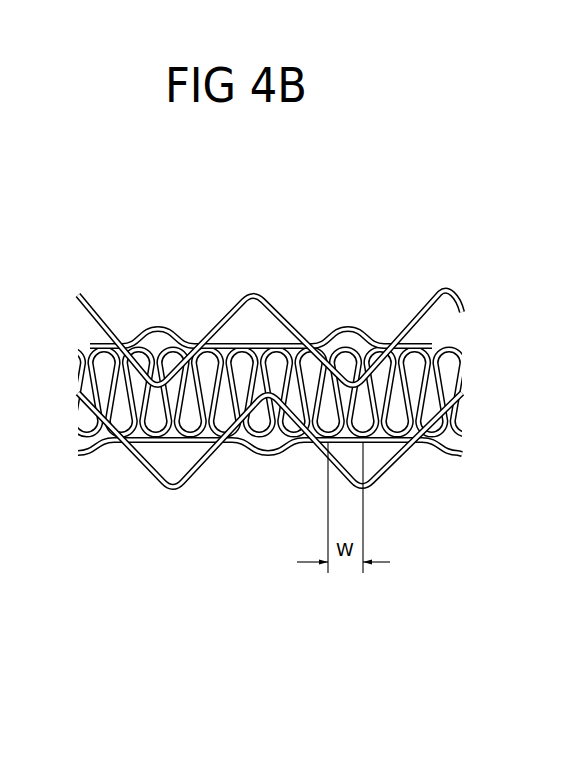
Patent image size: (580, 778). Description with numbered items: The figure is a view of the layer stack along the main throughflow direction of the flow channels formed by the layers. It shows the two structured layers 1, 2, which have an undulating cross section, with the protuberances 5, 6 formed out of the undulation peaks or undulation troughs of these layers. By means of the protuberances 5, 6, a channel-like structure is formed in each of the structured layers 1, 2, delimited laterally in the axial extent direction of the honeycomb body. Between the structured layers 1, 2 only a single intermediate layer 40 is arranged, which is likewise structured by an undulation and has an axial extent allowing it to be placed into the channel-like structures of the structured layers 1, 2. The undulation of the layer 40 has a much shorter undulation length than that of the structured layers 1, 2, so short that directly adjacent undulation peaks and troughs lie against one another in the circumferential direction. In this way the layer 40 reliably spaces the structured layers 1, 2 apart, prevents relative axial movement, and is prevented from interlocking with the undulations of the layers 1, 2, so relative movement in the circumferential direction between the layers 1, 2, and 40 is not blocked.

The structured layer 1 is at (253, 289).
The structured layer 2 is at (173, 497).
The protuberance 5 is at (349, 329).
The protuberance 6 is at (267, 457).
The intermediate layer 40 is at (422, 343).